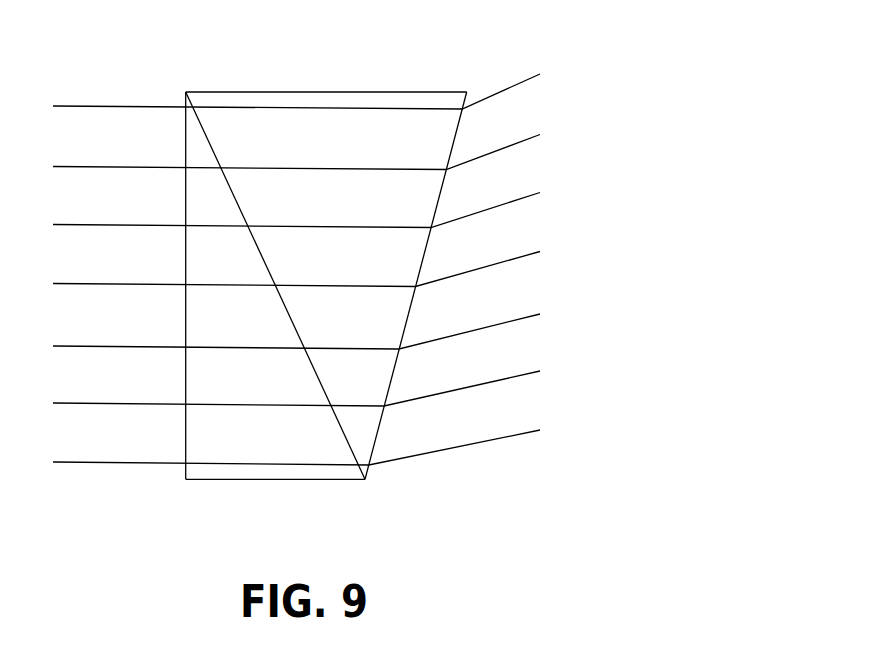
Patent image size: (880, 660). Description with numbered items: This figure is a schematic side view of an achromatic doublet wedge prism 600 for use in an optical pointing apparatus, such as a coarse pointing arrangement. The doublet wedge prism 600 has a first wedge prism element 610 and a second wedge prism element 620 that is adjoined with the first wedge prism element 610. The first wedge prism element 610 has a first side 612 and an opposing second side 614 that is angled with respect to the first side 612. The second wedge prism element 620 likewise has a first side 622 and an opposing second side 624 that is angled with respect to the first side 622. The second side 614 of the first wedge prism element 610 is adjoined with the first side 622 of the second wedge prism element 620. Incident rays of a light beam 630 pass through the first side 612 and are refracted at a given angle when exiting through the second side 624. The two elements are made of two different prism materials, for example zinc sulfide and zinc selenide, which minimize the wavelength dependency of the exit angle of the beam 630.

The achromatic doublet wedge prism 600 is at (422, 62).
The first wedge prism element 610 is at (267, 445).
The first side of first wedge prism element 612 is at (185, 337).
The second side of first wedge prism element 614 is at (310, 367).
The second wedge prism element 620 is at (337, 133).
The first side of second wedge prism element 622 is at (245, 220).
The second side of second wedge prism element 624 is at (418, 275).
The light beam 630 is at (128, 167).